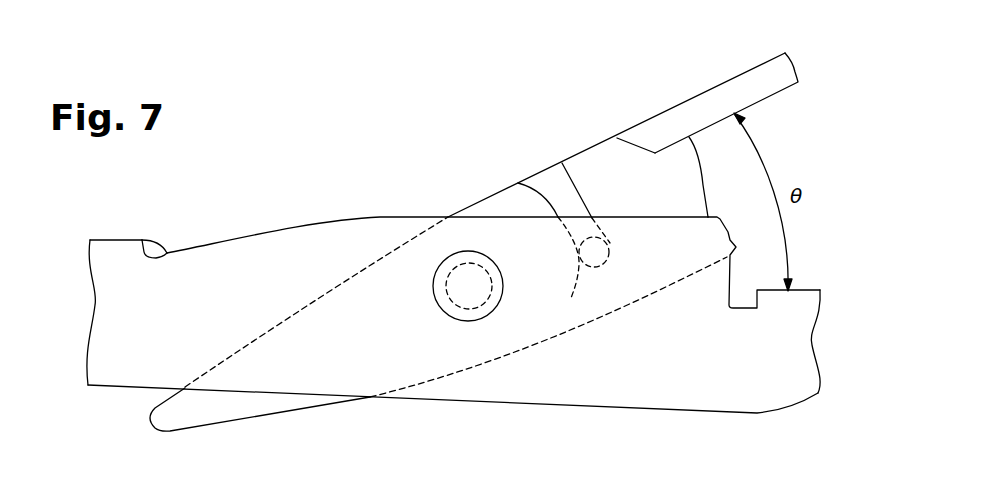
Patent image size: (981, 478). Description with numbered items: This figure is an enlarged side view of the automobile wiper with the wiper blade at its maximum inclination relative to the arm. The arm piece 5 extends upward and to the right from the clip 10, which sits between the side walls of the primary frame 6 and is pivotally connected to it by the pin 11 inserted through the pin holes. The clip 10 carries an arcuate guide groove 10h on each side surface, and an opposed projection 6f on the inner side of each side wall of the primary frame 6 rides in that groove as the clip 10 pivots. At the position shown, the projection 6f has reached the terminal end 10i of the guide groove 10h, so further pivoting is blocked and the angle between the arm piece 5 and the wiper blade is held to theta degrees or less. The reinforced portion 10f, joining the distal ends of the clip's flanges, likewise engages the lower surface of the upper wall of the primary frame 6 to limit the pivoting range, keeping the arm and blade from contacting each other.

The arm piece 5 is at (695, 105).
The primary frame 6 is at (320, 224).
The projections 6f is at (612, 246).
The clip 10 is at (592, 147).
The reinforced portion 10f is at (170, 418).
The arcuate guide groove 10h is at (576, 188).
The terminal end 10i is at (549, 270).
The pin 11 is at (456, 294).